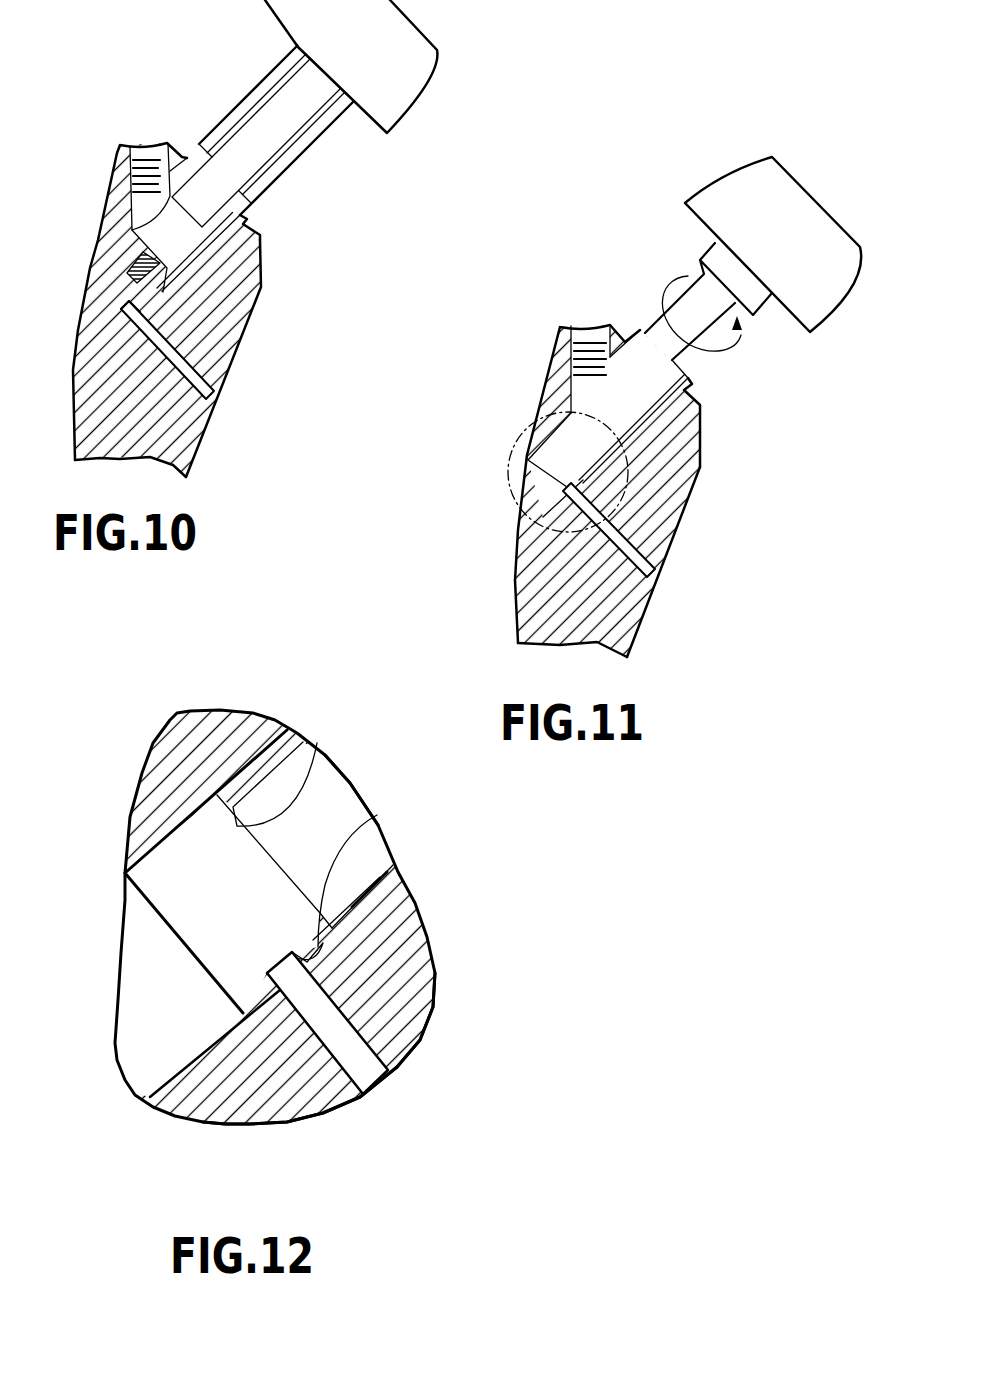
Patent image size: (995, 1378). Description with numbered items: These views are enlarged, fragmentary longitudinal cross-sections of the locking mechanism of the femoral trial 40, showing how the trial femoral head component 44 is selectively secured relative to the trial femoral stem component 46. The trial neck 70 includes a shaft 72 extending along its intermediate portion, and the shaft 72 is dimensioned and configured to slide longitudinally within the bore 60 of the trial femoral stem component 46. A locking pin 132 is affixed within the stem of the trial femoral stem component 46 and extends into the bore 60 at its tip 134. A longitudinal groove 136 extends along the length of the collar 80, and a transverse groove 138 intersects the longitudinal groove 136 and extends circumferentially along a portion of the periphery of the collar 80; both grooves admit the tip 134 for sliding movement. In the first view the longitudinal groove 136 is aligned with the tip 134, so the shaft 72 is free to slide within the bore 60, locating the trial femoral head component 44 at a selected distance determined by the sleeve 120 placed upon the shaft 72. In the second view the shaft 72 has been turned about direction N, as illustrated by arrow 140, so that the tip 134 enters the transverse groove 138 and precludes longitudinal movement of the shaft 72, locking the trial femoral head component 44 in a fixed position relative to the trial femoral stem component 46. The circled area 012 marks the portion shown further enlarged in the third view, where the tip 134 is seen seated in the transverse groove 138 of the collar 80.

In FIG. 10, the femoral trial 40 is at (202, 449).
In FIG. 11, the femoral trial 40 is at (636, 655).
In FIG. 12, the femoral trial 40 is at (249, 1130).
In FIG. 10, the trial femoral head component 44 is at (418, 95).
In FIG. 11, the trial femoral head component 44 is at (712, 182).
In FIG. 10, the trial femoral stem component 46 is at (202, 410).
In FIG. 11, the trial femoral stem component 46 is at (647, 603).
In FIG. 12, the trial femoral stem component 46 is at (398, 1047).
In FIG. 10, the bore 60 is at (100, 330).
In FIG. 11, the bore 60 is at (533, 513).
In FIG. 12, the bore 60 is at (193, 1058).
In FIG. 10, the trial neck 70 is at (264, 103).
In FIG. 11, the trial neck 70 is at (651, 320).
In FIG. 12, the trial neck 70 is at (352, 781).
In FIG. 10, the shaft 72 is at (237, 150).
In FIG. 11, the shaft 72 is at (684, 360).
In FIG. 12, the shaft 72 is at (382, 870).
In FIG. 10, the collar 80 is at (122, 250).
In FIG. 11, the collar 80 is at (542, 452).
In FIG. 12, the collar 80 is at (310, 758).
In FIG. 10, the sleeve 120 is at (307, 162).
In FIG. 10, the locking pin 132 is at (190, 360).
In FIG. 11, the locking pin 132 is at (647, 553).
In FIG. 12, the locking pin 132 is at (340, 1075).
In FIG. 10, the tip 134 is at (127, 303).
In FIG. 11, the tip 134 is at (527, 470).
In FIG. 12, the tip 134 is at (283, 967).
In FIG. 10, the longitudinal groove 136 is at (165, 276).
In FIG. 11, the transverse groove 138 is at (560, 413).
In FIG. 12, the transverse groove 138 is at (340, 855).
In FIG. 11, the arrow 140 is at (738, 340).
In FIG. 11, the circled area 012 is at (505, 503).